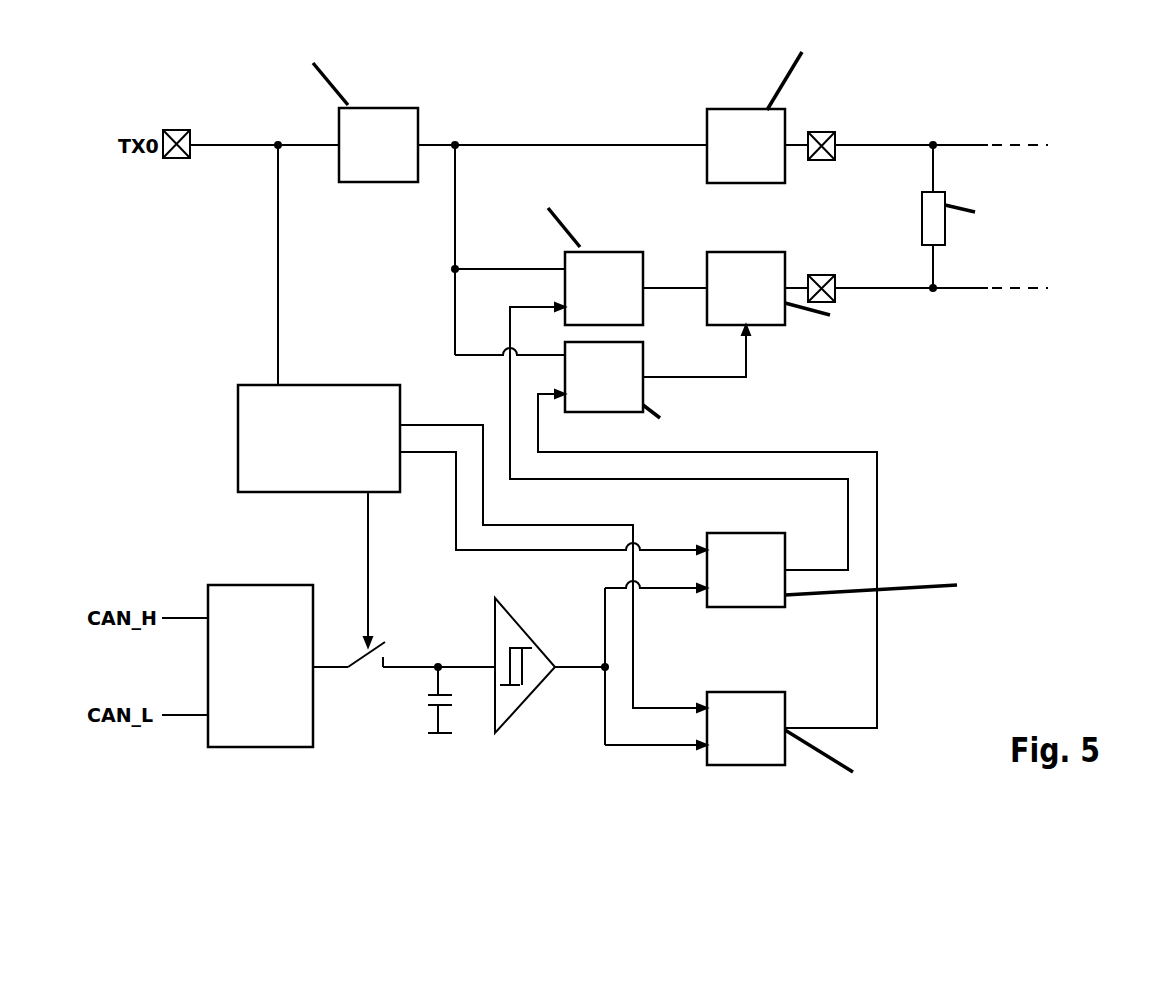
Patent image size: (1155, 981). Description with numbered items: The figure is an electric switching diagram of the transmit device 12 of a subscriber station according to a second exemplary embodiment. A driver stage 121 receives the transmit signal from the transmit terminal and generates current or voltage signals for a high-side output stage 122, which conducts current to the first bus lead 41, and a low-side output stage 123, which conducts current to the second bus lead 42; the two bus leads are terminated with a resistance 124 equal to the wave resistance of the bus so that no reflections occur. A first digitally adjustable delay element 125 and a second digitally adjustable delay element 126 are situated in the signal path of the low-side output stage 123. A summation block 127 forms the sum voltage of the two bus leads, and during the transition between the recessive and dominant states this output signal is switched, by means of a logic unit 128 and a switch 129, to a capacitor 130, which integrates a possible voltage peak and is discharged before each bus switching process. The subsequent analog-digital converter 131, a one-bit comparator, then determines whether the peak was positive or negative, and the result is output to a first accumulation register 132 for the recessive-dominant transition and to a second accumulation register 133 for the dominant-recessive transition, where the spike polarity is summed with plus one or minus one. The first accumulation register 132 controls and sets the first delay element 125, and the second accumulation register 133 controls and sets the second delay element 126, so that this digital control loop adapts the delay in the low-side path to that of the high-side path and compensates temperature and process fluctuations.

The transmit device 12 is at (1066, 96).
The first bus lead 41 is at (880, 145).
The second bus lead 42 is at (879, 289).
The driver stage 121 is at (378, 108).
The CAN_H output stage 122 is at (748, 109).
The CAN_L output stage 123 is at (748, 252).
The resistance 124 is at (945, 216).
The first digitally adjustable delay element 125 is at (603, 252).
The second digitally adjustable delay element 126 is at (643, 398).
The summation block 127 is at (261, 585).
The logic unit 128 is at (318, 385).
The switch 129 is at (360, 668).
The capacitor 130 is at (428, 707).
The analog-digital converter 131 is at (530, 700).
The first accumulation register 132 is at (746, 533).
The second accumulation register 133 is at (745, 692).